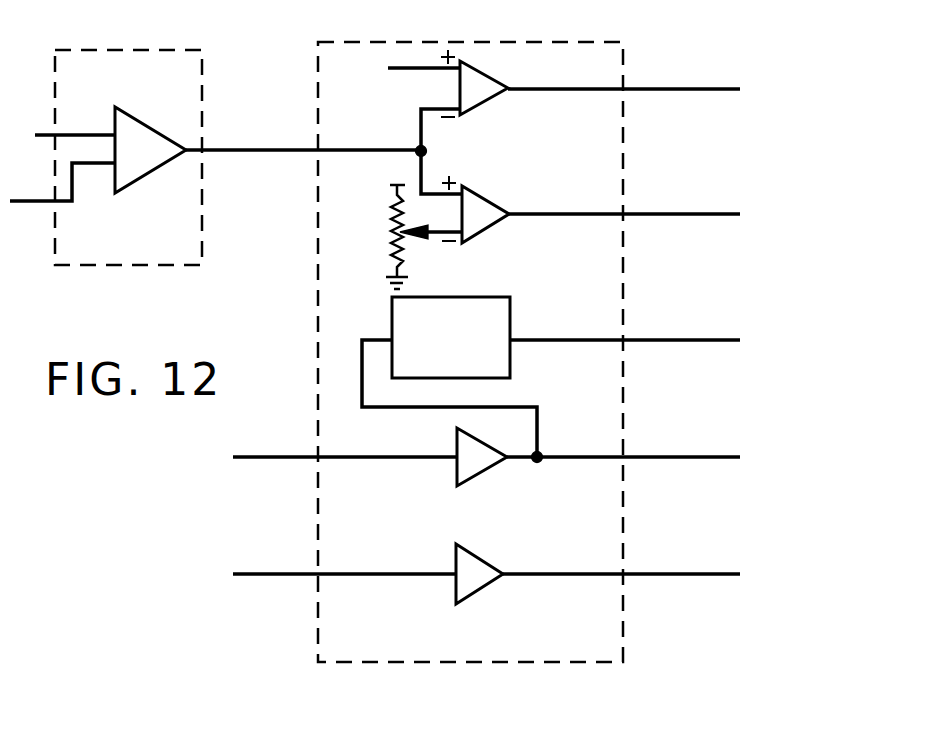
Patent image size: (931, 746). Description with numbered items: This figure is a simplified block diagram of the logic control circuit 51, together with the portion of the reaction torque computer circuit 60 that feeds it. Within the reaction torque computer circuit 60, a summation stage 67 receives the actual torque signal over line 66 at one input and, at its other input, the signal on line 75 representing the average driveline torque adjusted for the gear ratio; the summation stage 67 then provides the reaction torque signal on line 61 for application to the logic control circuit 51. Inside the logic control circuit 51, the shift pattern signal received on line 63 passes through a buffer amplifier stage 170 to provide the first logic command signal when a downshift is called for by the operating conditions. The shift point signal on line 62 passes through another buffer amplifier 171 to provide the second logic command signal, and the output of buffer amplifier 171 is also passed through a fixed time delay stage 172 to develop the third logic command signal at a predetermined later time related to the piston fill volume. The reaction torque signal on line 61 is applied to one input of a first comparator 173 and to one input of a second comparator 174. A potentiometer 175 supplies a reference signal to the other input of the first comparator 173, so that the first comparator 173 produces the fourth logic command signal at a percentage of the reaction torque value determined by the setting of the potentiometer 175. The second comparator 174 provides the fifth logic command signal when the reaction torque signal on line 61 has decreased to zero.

The reaction torque computer circuit 60 is at (154, 42).
The summation stage 67 is at (135, 182).
The line 75 is at (78, 134).
The line 66 is at (48, 203).
The line 61 is at (276, 149).
The logic control circuit 51 is at (470, 383).
The second comparator 174 is at (484, 104).
The first comparator 173 is at (482, 233).
The potentiometer 175 is at (391, 233).
The fixed time delay stage 172 is at (510, 358).
The buffer amplifier 171 is at (480, 468).
The buffer amplifier stage 170 is at (473, 592).
The line 62 is at (286, 455).
The line 63 is at (278, 573).